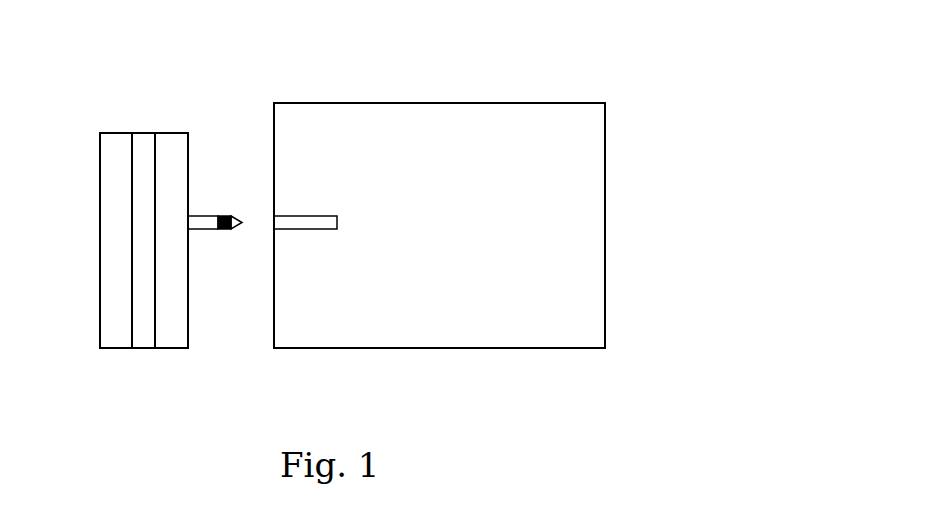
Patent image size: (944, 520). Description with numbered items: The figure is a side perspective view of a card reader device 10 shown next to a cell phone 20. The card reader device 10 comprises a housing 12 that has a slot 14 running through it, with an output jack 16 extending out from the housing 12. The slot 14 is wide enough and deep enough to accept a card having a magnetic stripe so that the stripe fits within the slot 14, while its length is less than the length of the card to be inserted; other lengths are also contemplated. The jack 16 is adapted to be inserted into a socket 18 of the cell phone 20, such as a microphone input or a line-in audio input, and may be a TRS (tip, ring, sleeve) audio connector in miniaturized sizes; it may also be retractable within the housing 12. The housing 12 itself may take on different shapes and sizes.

The card reader device 10 is at (190, 114).
The housing 12 is at (101, 246).
The slot 14 is at (142, 152).
The output jack 16 is at (203, 214).
The socket 18 is at (303, 220).
The cell phone 20 is at (408, 349).